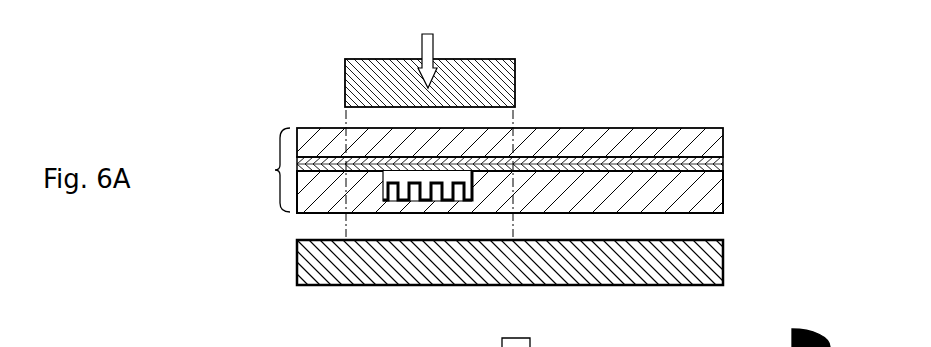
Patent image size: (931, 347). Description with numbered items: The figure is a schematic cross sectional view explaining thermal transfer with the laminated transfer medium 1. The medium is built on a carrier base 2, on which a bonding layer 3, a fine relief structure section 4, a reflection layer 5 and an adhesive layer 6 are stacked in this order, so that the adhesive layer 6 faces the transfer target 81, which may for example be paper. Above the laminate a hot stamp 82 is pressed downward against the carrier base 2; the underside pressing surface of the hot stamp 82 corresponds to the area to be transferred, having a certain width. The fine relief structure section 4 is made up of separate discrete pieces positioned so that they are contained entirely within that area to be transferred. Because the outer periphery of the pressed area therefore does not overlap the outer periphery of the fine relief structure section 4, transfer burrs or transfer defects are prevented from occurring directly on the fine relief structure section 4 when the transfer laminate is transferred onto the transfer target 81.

The laminated transfer medium 1 is at (273, 170).
The carrier base 2 is at (713, 136).
The bonding layer 3 is at (708, 165).
The fine relief structure section 4 is at (383, 196).
The reflection layer 5 is at (418, 197).
The adhesive layer 6 is at (708, 200).
The transfer target 81 is at (708, 272).
The hot stamp 82 is at (490, 85).